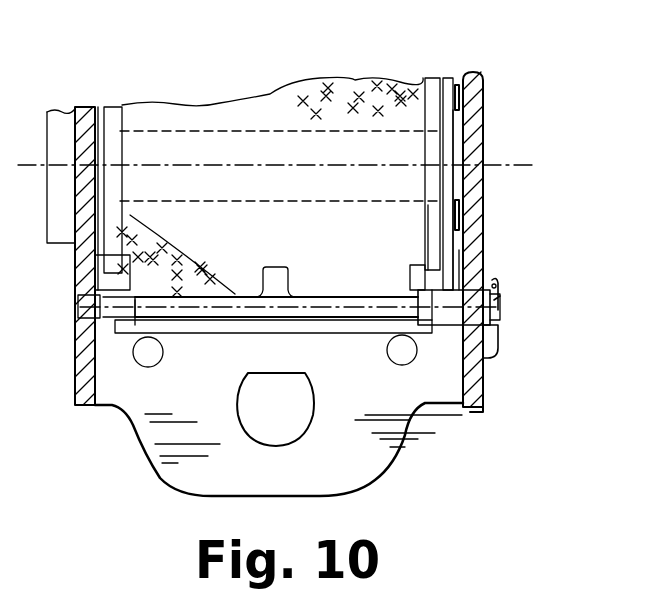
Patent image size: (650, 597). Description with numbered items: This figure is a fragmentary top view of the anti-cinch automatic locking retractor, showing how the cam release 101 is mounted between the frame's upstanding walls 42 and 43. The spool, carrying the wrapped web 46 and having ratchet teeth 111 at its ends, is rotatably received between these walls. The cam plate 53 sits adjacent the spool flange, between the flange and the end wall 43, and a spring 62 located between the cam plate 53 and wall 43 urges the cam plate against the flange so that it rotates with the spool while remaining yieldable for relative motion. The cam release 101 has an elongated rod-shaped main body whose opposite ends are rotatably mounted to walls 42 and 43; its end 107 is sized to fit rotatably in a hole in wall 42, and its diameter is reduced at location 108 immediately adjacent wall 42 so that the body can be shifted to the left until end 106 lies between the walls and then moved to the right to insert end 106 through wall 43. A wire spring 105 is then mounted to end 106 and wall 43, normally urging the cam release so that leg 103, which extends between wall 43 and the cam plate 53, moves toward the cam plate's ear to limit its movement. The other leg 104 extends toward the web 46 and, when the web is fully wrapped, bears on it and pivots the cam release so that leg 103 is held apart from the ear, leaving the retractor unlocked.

The upstanding wall 42 is at (121, 410).
The end wall 43 is at (475, 188).
The web 46 is at (281, 107).
The cam plate 53 is at (447, 123).
The spring 62 is at (456, 90).
The cam release 101 is at (213, 293).
The leg 103 is at (470, 259).
The leg 104 is at (288, 272).
The spring 105 is at (498, 334).
The end 106 is at (501, 303).
The end 107 is at (97, 337).
The reduced-diameter location 108 is at (145, 268).
The ratchet teeth 111 is at (112, 115).